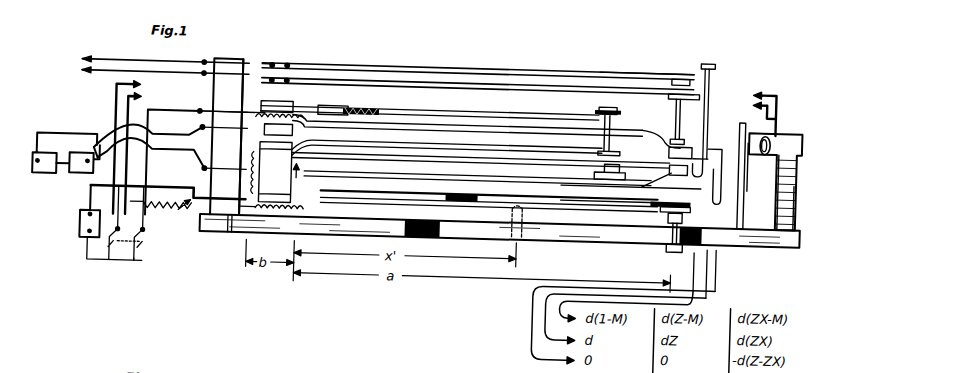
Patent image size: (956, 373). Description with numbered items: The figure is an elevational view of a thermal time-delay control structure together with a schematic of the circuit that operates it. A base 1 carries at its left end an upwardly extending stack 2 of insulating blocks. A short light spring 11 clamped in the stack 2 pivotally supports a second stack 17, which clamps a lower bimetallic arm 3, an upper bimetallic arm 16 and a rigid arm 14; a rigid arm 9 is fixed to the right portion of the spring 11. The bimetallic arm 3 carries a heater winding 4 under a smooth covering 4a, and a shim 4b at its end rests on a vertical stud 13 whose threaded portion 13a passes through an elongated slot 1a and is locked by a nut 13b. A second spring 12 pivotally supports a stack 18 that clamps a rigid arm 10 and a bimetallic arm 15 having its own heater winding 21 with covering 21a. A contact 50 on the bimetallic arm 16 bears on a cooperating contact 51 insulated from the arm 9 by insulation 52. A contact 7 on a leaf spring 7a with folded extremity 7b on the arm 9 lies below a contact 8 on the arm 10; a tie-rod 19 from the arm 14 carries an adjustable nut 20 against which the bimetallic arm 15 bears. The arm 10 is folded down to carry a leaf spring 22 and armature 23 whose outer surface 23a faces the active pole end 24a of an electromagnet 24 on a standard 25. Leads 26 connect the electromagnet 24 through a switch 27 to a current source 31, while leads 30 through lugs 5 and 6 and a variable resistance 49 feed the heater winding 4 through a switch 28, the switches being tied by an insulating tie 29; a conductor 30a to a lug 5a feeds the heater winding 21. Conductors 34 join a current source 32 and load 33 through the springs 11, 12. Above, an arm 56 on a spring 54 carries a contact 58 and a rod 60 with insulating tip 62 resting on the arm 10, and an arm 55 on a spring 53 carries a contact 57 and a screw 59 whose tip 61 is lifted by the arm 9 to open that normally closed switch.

The base 1 is at (208, 235).
The elongated slot 1a is at (440, 229).
The stack of insulating blocks 2 is at (240, 60).
The bimetallic arm 3 is at (304, 197).
The heater winding 4 is at (456, 187).
The covering 4a is at (568, 240).
The shim 4b is at (648, 191).
The lug 5 is at (228, 235).
The lug 5a is at (198, 110).
The lug 6 is at (219, 189).
The switch contact 7 is at (669, 168).
The leaf spring 7a is at (660, 170).
The downwardly-folded extremity 7b is at (706, 126).
The switch contact 8 is at (667, 145).
The arm 9 is at (424, 173).
The arm 10 is at (475, 112).
The spring 11 is at (225, 158).
The spring 12 is at (198, 127).
The stud 13 is at (664, 232).
The reduced-diameter threaded portion 13a is at (668, 242).
The nut 13b is at (694, 240).
The arm 14 is at (508, 133).
The bimetallic arm 15 is at (318, 102).
The bimetallic arm 16 is at (394, 155).
The stack 17 is at (275, 171).
The stack 18 is at (288, 102).
The tie-rod 19 is at (614, 103).
The adjustable nut 20 is at (602, 96).
The heater winding 21 is at (356, 104).
The covering 21a is at (430, 102).
The leaf spring 22 is at (736, 182).
The armature 23 is at (744, 173).
The outer surface of armature 23a is at (760, 139).
The electromagnet 24 is at (778, 110).
The active pole end 24a is at (792, 154).
The standard 25 is at (794, 184).
The leads 26 is at (110, 106).
The switch 27 is at (115, 223).
The switch 28 is at (145, 246).
The insulating tie 29 is at (135, 264).
The leads 30 is at (168, 182).
The conductor 30a is at (156, 111).
The current source 31 is at (78, 220).
The current source 32 is at (63, 166).
The load 33 is at (77, 172).
The conductors 34 is at (102, 138).
The variable resistance 49 is at (171, 210).
The contact 50 is at (614, 145).
The cooperating contact 51 is at (616, 162).
The insulation 52 is at (606, 187).
The spring 53 is at (270, 64).
The spring 54 is at (248, 82).
The arm 55 is at (412, 58).
The arm 56 is at (442, 73).
The contact 57 is at (676, 80).
The contact 58 is at (662, 62).
The vertical screw 59 is at (702, 49).
The vertical rod 60 is at (674, 93).
The bottom tip 61 is at (718, 134).
The bottom tip 62 is at (678, 126).